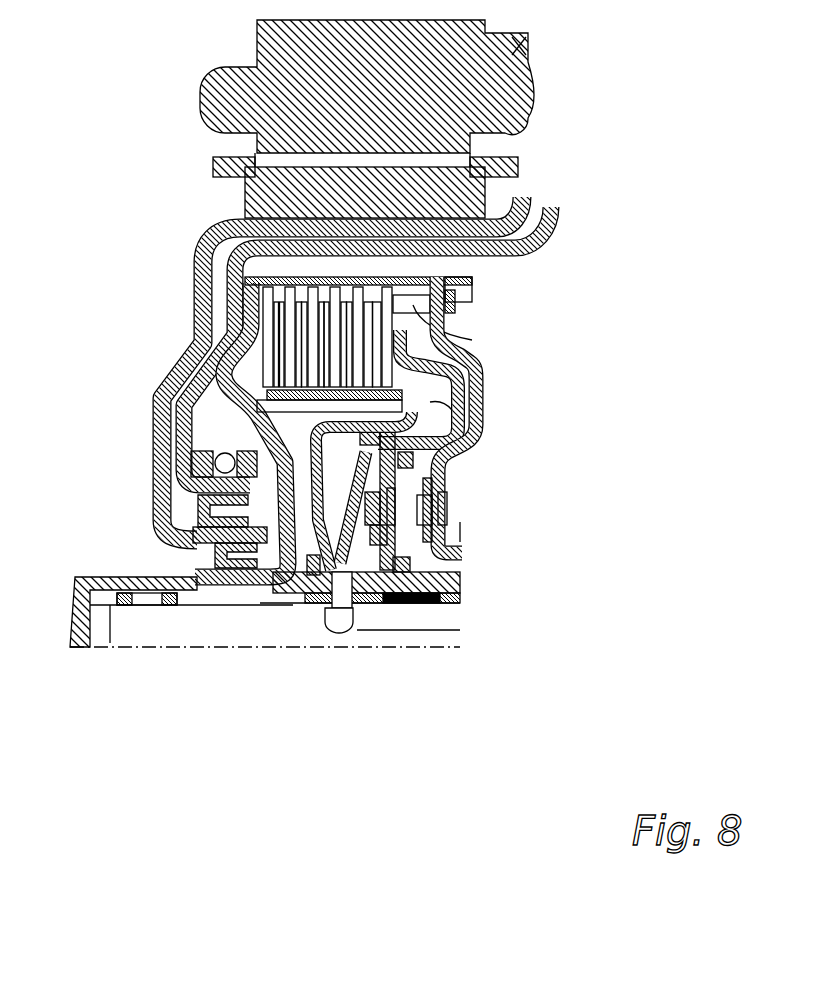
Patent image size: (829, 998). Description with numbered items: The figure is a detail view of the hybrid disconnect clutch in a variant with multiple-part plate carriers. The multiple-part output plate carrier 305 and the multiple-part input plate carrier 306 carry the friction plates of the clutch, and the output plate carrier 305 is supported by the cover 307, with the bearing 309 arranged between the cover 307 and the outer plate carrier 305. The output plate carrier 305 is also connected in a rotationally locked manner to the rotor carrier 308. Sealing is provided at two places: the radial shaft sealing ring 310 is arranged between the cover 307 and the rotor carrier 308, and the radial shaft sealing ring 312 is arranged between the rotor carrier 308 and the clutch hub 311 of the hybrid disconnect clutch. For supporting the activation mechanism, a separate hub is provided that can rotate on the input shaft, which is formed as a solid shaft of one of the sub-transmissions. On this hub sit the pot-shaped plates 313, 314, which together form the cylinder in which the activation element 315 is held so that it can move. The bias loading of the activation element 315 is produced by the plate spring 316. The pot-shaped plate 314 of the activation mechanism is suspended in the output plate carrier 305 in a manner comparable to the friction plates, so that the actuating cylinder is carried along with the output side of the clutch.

The output plate carrier 305 is at (262, 330).
The input plate carrier 306 is at (203, 417).
The cover 307 is at (560, 210).
The rotor carrier 308 is at (227, 233).
The bearing 309 is at (226, 453).
The radial shaft sealing ring 310 is at (193, 540).
The clutch hub 311 is at (82, 618).
The radial shaft sealing ring 312 is at (192, 563).
The pot-shaped plate 313 is at (293, 570).
The pot-shaped plate 314 is at (472, 426).
The activation element 315 is at (483, 373).
The plate spring 316 is at (357, 597).